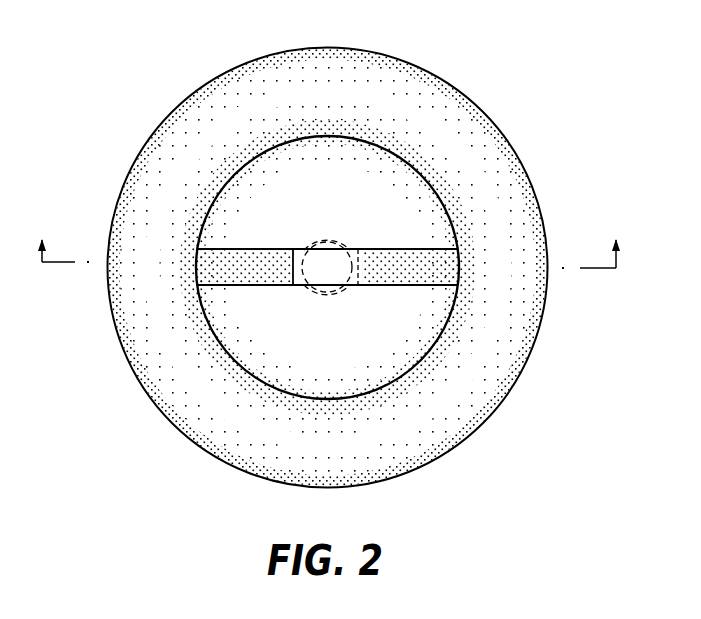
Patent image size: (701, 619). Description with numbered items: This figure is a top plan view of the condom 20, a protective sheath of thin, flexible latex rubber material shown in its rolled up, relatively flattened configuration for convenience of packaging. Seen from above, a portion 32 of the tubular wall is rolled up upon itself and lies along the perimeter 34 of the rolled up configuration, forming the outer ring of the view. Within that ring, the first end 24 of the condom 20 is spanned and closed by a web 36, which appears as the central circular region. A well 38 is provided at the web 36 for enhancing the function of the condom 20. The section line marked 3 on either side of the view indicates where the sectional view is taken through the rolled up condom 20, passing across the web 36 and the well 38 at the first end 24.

The condom 20 is at (470, 96).
The first end 24 is at (370, 373).
The portion of tubular wall 32 is at (402, 75).
The perimeter 34 is at (503, 133).
The web 36 is at (309, 356).
The well 38 is at (337, 288).
The section line 3- 3 is at (328, 232).